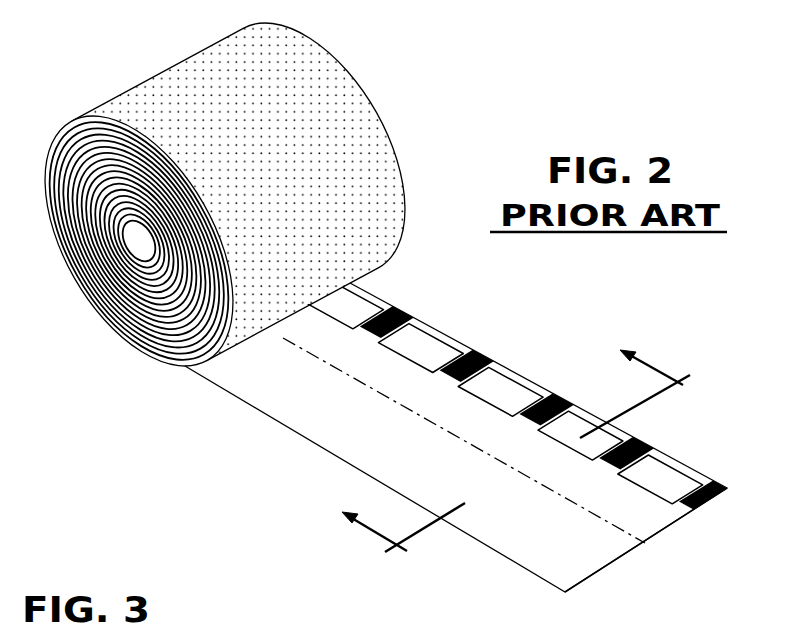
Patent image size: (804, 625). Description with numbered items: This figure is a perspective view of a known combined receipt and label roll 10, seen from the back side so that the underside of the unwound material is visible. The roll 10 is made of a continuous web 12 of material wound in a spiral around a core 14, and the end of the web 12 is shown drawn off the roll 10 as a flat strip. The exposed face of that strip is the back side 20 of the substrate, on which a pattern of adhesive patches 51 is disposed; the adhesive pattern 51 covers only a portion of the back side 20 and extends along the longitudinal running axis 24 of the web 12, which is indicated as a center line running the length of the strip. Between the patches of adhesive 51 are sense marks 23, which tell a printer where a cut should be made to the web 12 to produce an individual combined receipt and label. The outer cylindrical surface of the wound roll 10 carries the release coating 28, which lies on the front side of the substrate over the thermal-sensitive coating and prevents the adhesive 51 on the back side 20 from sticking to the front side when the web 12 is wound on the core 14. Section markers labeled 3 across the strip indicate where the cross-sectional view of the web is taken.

The combined receipt and label roll 10 is at (441, 74).
The web 12 is at (297, 33).
The core 14 is at (136, 239).
The back side 20 is at (293, 405).
The sense marks 23 is at (480, 358).
The longitudinal running axis 24 is at (647, 543).
The release coating 28 is at (173, 88).
The adhesive patches 51 is at (347, 303).
The section line 3- 3 is at (504, 441).